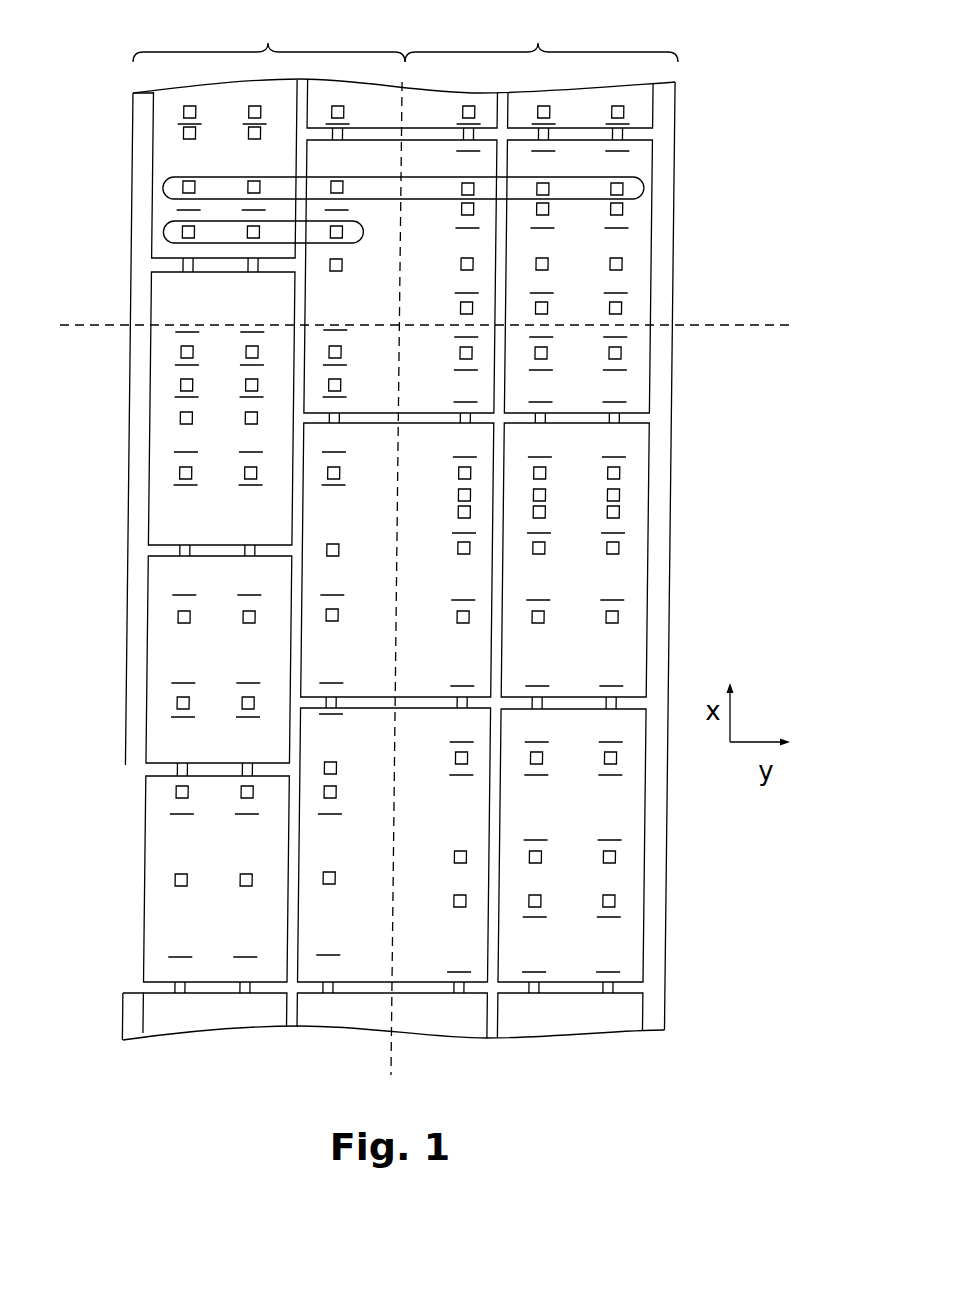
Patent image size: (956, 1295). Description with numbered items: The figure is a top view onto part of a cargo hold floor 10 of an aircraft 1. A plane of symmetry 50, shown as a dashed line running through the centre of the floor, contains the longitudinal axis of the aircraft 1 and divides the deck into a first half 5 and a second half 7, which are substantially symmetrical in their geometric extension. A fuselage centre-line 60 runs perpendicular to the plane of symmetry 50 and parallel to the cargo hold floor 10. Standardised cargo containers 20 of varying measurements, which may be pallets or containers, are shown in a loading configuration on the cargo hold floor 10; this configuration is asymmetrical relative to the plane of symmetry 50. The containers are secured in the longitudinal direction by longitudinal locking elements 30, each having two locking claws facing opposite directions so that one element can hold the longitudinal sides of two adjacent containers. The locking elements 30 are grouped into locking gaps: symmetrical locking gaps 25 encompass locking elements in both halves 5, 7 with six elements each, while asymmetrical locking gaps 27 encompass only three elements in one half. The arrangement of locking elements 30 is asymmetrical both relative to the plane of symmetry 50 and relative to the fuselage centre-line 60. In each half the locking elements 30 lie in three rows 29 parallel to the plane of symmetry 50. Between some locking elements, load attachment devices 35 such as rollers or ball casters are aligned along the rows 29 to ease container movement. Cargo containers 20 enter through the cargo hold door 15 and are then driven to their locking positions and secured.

The aircraft 1 is at (105, 426).
The first half 5 is at (269, 35).
The second half 7 is at (541, 35).
The cargo hold floor 10 is at (135, 578).
The cargo hold door 15 is at (98, 866).
The cargo container 20 is at (152, 131).
The symmetrical locking gap 25 is at (165, 188).
The asymmetrical locking gap 27 is at (165, 233).
The row 29 is at (176, 1003).
The longitudinal locking element 30 is at (605, 413).
The load attachment device 35 is at (534, 842).
The plane of symmetry 50 is at (389, 1058).
The fuselage centre-line 60 is at (768, 323).